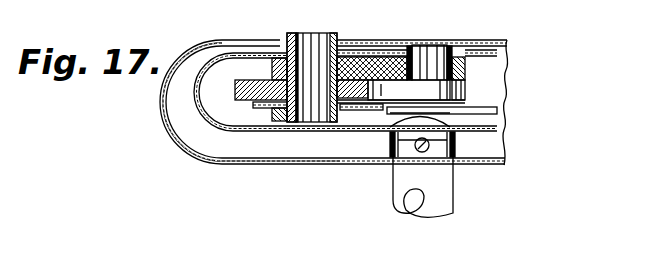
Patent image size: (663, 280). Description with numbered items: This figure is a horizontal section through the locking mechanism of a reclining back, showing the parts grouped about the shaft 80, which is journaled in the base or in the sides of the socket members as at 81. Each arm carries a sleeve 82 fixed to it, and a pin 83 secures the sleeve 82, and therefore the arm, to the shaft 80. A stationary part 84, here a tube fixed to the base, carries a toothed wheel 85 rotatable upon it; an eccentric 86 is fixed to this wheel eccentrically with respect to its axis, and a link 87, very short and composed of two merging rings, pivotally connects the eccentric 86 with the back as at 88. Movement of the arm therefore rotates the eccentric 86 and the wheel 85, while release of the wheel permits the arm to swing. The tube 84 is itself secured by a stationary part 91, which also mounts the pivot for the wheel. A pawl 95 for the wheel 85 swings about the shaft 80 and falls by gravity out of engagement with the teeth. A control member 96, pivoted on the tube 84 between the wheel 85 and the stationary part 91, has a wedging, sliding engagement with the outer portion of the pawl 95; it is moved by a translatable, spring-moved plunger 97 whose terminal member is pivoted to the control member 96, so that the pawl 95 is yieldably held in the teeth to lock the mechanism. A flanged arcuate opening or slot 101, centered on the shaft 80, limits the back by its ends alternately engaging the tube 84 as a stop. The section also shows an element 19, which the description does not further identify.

The inner tube 19 is at (200, 106).
The shaft 80 is at (413, 178).
The journal 81 is at (463, 38).
The sleeve 82 is at (380, 158).
The pin 83 is at (395, 162).
The stationary part 84 is at (300, 37).
The toothed wheel 85 is at (250, 82).
The eccentric 86 is at (386, 42).
The link 87 is at (415, 43).
The back connection 88 is at (472, 42).
The stationary part 91 is at (280, 106).
The pawl 95 is at (465, 88).
The control member 96 is at (262, 104).
The plunger 97 is at (500, 114).
The arcuate opening or slot 101 is at (350, 38).